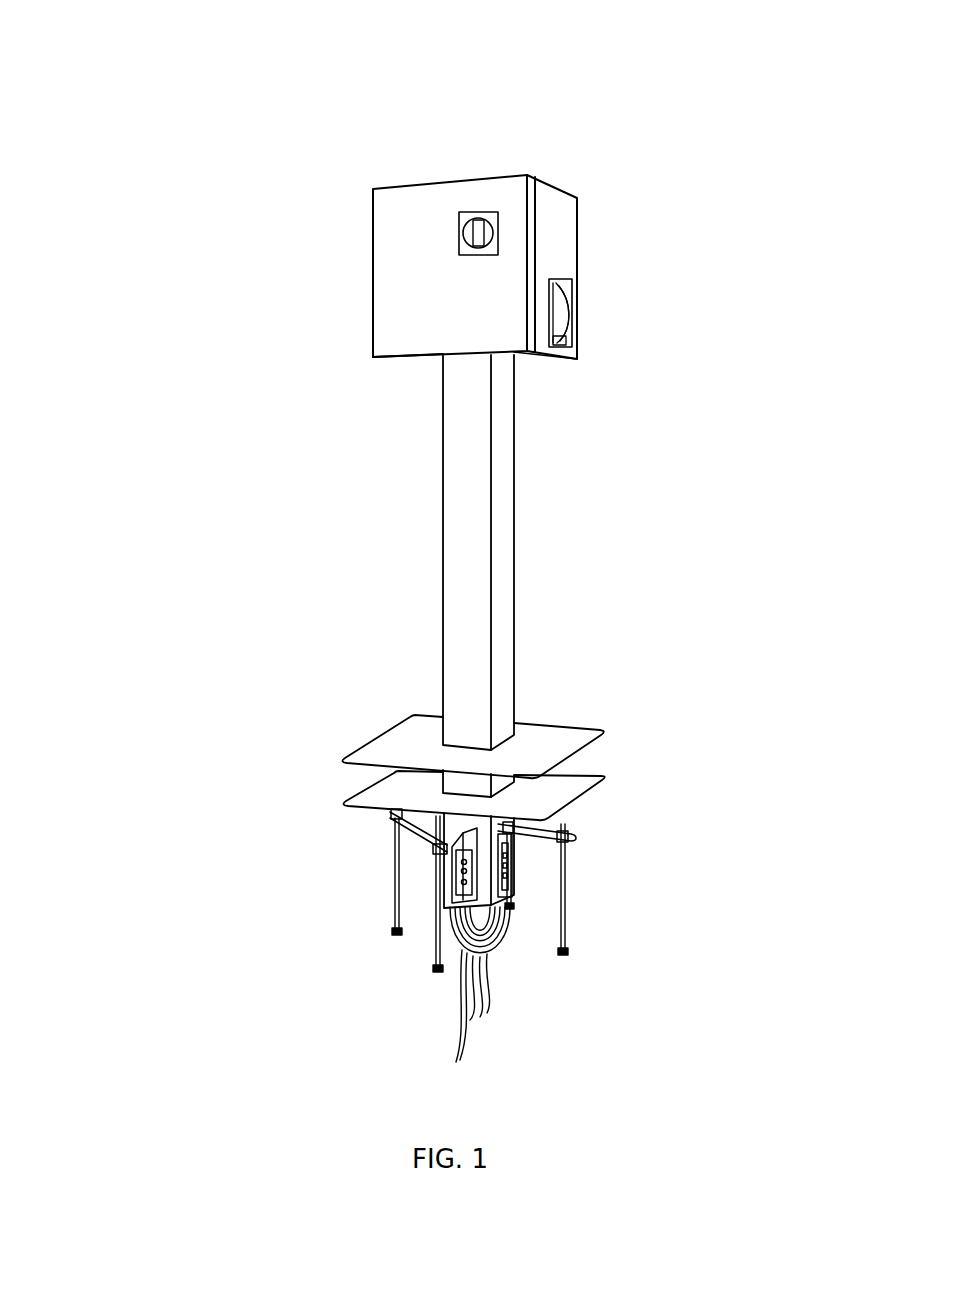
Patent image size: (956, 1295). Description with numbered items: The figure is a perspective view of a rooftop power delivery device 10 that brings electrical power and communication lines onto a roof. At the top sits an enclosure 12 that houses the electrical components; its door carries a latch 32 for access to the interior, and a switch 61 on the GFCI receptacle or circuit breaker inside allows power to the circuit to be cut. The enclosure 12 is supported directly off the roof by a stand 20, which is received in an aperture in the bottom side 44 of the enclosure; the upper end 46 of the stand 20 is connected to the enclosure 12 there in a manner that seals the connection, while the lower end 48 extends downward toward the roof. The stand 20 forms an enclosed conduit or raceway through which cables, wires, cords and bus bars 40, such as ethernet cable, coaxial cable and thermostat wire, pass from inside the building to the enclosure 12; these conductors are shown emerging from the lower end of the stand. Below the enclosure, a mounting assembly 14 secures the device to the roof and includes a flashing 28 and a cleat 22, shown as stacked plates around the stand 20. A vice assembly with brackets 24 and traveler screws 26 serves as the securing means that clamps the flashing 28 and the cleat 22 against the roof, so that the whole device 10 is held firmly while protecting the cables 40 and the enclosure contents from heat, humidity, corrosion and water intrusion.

The rooftop power delivery device 10 is at (380, 68).
The enclosure 12 is at (373, 310).
The mounting assembly 14 is at (426, 712).
The stand 20 is at (517, 467).
The cleat 22 is at (578, 788).
The brackets 24 is at (397, 813).
The traveler screws 26 is at (393, 900).
The flashing 28 is at (578, 735).
The latch 32 is at (497, 229).
The cables, wires, cords and bus bars 40 is at (474, 1001).
The bottom side of the enclosure 44 is at (373, 360).
The upper end of the stand 46 is at (517, 365).
The lower end of the stand 48 is at (514, 870).
The switch 61 is at (578, 318).